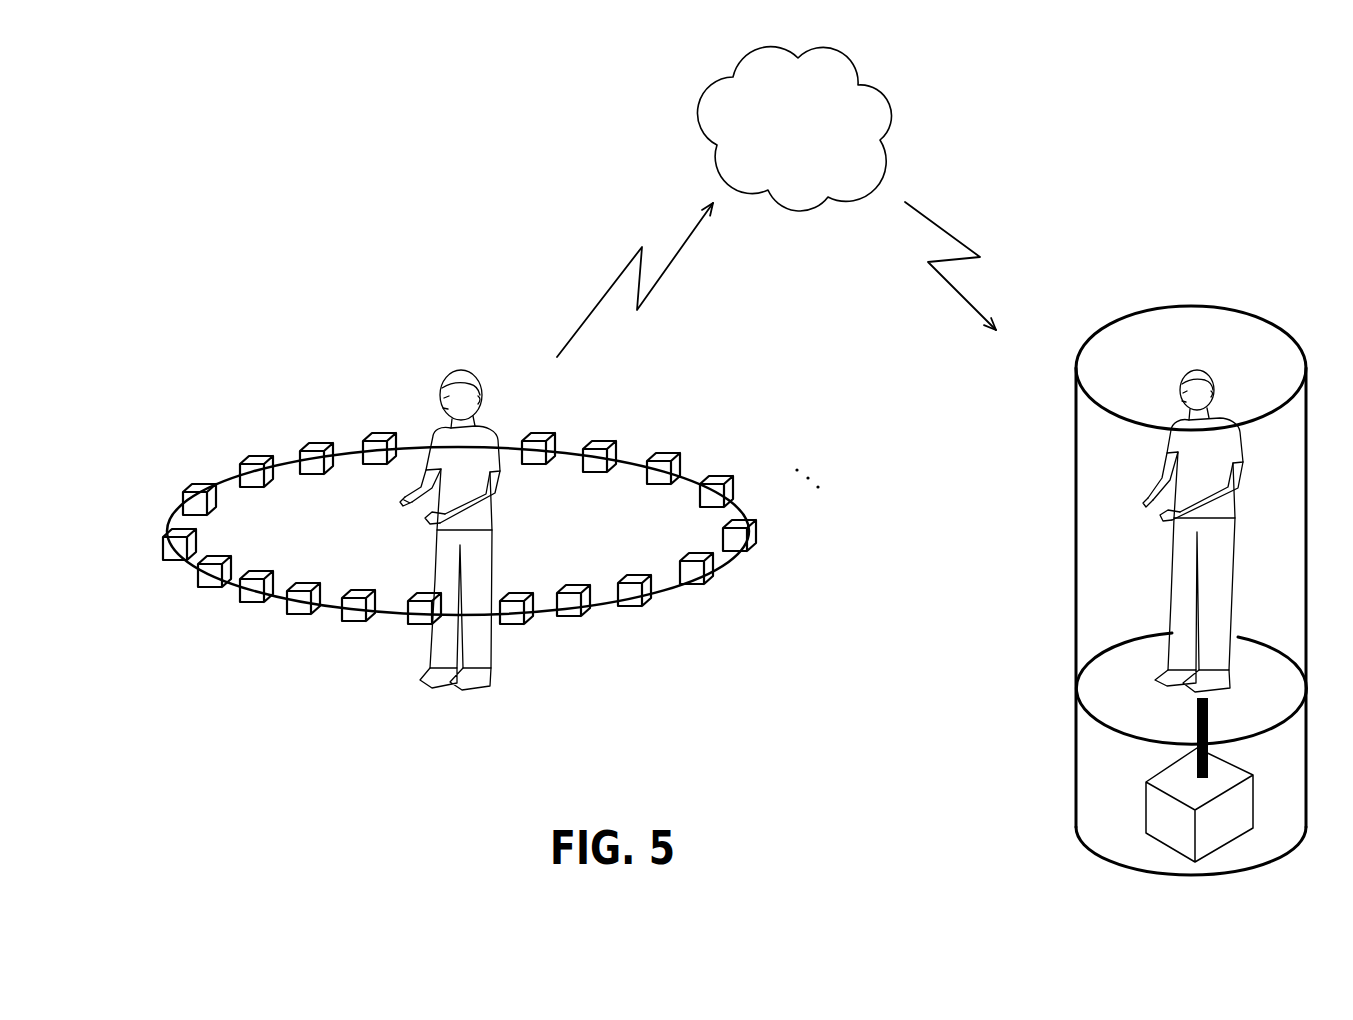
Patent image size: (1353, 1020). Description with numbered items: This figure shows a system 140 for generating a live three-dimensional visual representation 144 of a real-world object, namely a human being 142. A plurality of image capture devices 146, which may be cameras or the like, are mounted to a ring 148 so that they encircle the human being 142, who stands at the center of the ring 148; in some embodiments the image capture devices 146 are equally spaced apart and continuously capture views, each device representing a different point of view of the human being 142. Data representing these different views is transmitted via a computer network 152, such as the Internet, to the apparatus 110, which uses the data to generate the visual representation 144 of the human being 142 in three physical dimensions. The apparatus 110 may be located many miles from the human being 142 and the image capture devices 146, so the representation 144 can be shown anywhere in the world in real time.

The apparatus 110 is at (1070, 551).
The system 140 is at (504, 530).
The human being 142 is at (443, 372).
The visual representation 144 is at (1192, 374).
The image capture devices 146 is at (548, 438).
The ring 148 is at (606, 605).
The computer network 152 is at (794, 129).